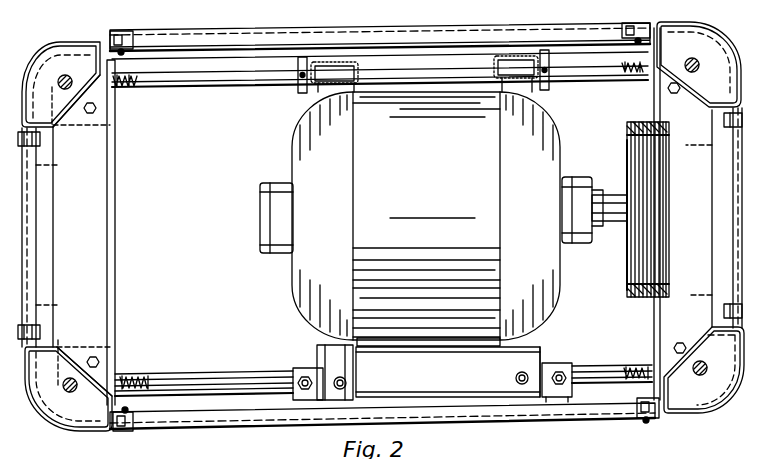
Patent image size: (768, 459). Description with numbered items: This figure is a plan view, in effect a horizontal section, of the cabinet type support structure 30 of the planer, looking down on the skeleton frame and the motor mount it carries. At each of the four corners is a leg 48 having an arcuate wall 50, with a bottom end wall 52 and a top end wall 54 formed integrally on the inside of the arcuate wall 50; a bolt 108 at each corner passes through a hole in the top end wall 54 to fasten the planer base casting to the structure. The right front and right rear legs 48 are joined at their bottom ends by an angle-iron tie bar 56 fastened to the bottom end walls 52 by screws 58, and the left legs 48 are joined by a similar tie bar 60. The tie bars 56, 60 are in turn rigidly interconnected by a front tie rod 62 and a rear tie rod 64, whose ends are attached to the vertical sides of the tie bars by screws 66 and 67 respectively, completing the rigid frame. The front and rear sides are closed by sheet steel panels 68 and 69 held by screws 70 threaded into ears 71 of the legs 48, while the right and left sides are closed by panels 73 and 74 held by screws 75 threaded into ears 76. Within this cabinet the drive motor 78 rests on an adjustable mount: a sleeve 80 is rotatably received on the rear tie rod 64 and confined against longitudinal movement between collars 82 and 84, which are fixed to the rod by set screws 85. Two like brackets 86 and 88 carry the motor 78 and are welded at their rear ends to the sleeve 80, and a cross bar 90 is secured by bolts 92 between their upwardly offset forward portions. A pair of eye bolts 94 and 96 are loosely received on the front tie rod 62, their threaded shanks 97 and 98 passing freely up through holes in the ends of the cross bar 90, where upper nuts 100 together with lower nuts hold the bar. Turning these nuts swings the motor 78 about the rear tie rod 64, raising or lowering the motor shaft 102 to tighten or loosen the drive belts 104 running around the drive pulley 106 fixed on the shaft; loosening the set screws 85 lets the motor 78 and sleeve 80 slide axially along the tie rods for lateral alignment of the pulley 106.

The support structure 30 is at (287, 436).
The leg 48 is at (40, 46).
The arcuate wall 50 is at (45, 62).
The bottom end wall 52 is at (102, 121).
The top end wall 54 is at (72, 127).
The tie bar 56 is at (668, 310).
The screw 58 is at (667, 89).
The tie bar 60 is at (115, 245).
The front tie rod 62 is at (215, 373).
The rear tie rod 64 is at (197, 89).
The screw 66 is at (150, 377).
The screw 67 is at (148, 80).
The front panel 68 is at (587, 417).
The rear panel 69 is at (320, 26).
The screw 70 is at (124, 33).
The ear 71 is at (142, 38).
The right side panel 73 is at (739, 207).
The left side panel 74 is at (38, 222).
The screw 75 is at (22, 130).
The ear 76 is at (374, 222).
The drive motor 78 is at (298, 274).
The sleeve 80 is at (437, 80).
The collar 82 is at (548, 93).
The collar 84 is at (314, 98).
The set screw 85 is at (295, 91).
The bracket 86 is at (535, 346).
The bracket 88 is at (357, 340).
The cross bar 90 is at (422, 374).
The bolt 92 is at (348, 378).
The eye bolt 94 is at (304, 369).
The eye bolt 96 is at (562, 363).
The threaded shank 97 is at (316, 381).
The threaded shank 98 is at (560, 402).
The upper nut 100 is at (295, 378).
The motor shaft 102 is at (612, 200).
The drive belt 104 is at (640, 122).
The drive pulley 106 is at (628, 152).
The bolt 108 is at (65, 77).